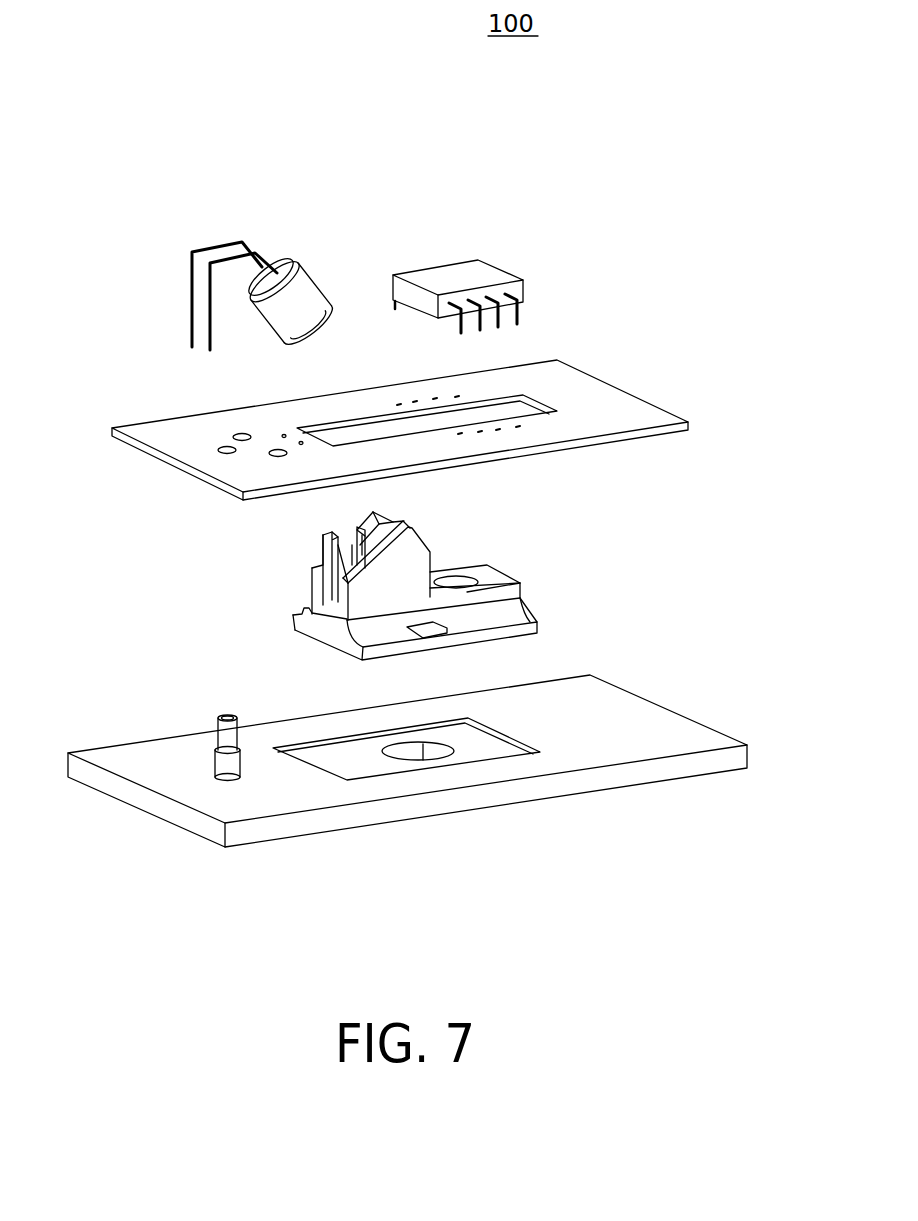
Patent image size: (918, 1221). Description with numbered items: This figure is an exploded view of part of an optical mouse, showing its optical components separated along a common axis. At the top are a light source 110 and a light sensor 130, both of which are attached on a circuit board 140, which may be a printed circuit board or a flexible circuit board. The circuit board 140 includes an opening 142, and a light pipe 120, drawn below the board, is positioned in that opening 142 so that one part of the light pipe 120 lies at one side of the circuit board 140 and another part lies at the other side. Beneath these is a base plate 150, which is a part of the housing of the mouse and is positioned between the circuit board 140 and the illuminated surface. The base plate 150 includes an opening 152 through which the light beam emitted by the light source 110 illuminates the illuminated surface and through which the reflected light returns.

The light source 110 is at (283, 268).
The light pipe 120 is at (493, 580).
The light sensor 130 is at (458, 270).
The circuit board 140 is at (642, 408).
The opening 142 is at (508, 411).
The base plate 150 is at (675, 730).
The opening 152 is at (416, 752).